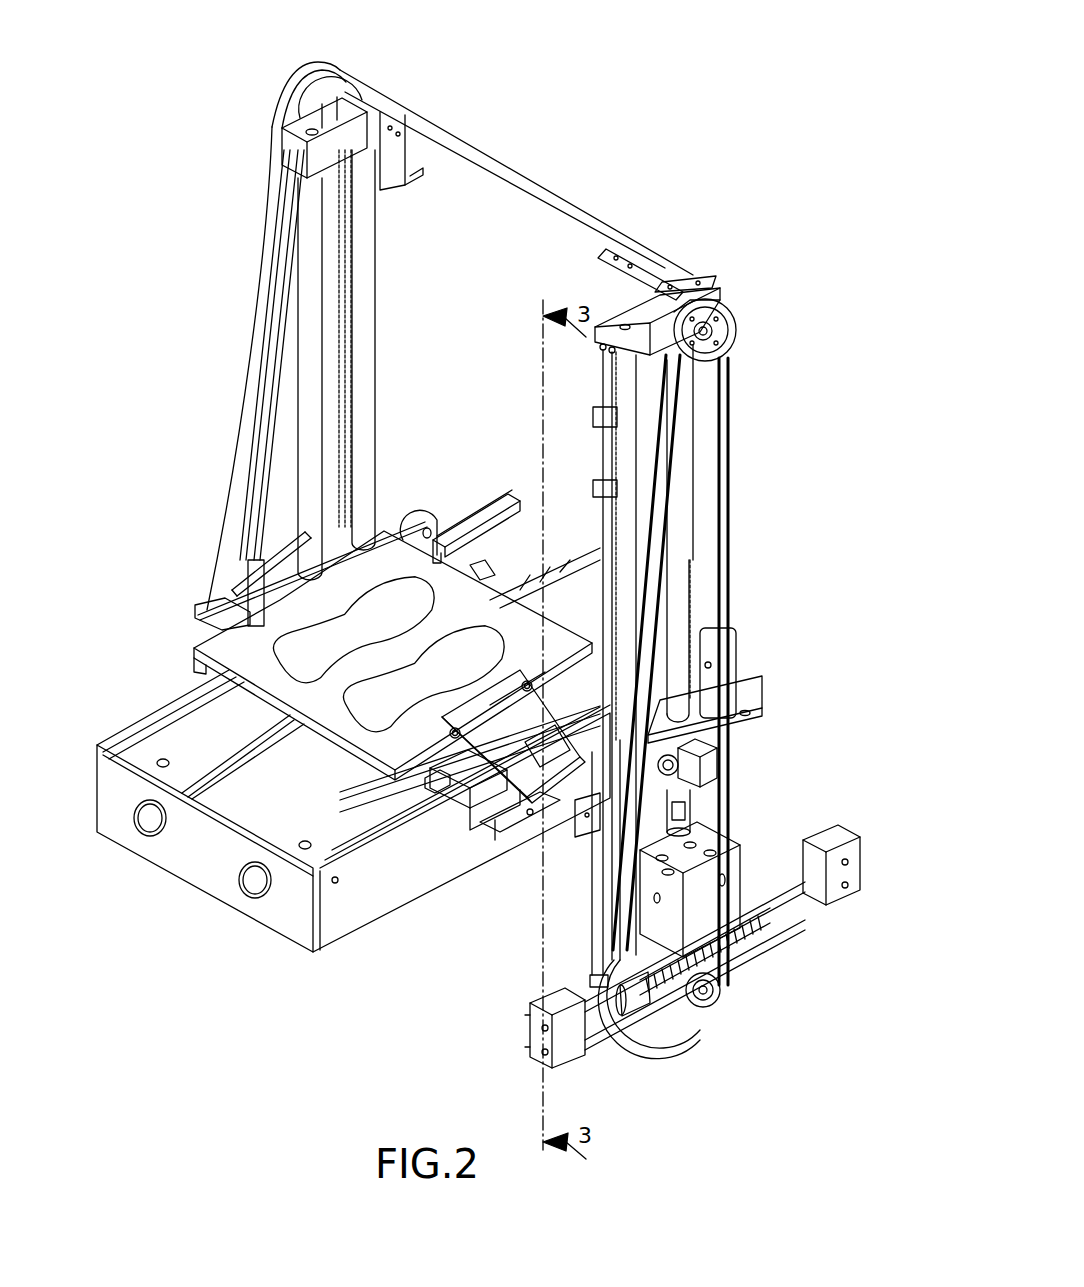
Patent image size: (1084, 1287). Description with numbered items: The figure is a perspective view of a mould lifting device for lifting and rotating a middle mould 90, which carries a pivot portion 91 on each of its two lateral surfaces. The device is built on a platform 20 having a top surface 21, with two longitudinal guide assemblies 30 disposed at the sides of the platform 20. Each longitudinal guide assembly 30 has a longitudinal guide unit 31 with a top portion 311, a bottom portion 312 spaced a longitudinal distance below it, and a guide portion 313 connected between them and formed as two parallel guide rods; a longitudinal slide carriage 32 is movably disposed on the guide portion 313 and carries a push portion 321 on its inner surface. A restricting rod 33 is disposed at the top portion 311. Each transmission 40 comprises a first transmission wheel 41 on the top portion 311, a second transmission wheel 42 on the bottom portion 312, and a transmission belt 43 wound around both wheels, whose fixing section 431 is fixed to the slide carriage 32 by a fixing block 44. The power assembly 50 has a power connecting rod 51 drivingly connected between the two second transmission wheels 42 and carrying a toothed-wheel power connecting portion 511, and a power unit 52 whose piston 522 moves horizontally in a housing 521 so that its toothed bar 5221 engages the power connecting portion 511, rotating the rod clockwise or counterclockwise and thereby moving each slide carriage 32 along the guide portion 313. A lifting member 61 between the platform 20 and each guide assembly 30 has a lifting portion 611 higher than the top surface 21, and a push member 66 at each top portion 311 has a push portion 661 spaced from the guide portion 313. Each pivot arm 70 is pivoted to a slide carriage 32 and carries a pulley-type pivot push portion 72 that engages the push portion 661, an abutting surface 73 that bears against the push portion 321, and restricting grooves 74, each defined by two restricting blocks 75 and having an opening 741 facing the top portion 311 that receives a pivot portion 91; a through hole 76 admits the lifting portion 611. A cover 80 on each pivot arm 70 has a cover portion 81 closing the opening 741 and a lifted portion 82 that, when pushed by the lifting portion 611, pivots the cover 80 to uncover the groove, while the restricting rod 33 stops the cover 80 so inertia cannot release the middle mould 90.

The platform 20 is at (353, 836).
The top surface 21 is at (320, 850).
The longitudinal guide assembly 30 is at (243, 330).
The longitudinal guide unit 31 is at (698, 455).
The top portion 311 is at (632, 318).
The bottom portion 312 is at (605, 912).
The guide portion 313 is at (683, 512).
The push portion 321 is at (584, 815).
The longitudinal slide carriage 32 is at (710, 705).
The restricting rod 33 is at (624, 334).
The transmission 40 is at (730, 287).
The first transmission wheel 41 is at (726, 322).
The second transmission wheel 42 is at (652, 1045).
The transmission belt 43 is at (742, 378).
The fixing section 431 is at (730, 752).
The fixing block 44 is at (722, 785).
The power assembly 50 is at (692, 976).
The power connecting rod 51 is at (556, 885).
The power connecting portion 511 is at (688, 1020).
The power unit 52 is at (593, 1045).
The housing 521 is at (808, 900).
The piston 522 is at (752, 935).
The toothed bar 5221 is at (738, 950).
The lifting member 61 is at (232, 603).
The lifting portion 611 is at (262, 590).
The push member 66 is at (405, 212).
The push portion 661 is at (432, 188).
The pivot arm 70 is at (470, 834).
The pivot push portion 72 is at (722, 670).
The abutting surface 73 is at (530, 818).
The restricting groove 74 is at (455, 750).
The opening 741 is at (435, 780).
The restricting block 75 is at (450, 790).
The through hole 76 is at (478, 822).
The cover 80 is at (524, 551).
The cover portion 81 is at (490, 706).
The lifted portion 82 is at (242, 528).
The middle mould 90 is at (404, 560).
The pivot portion 91 is at (452, 728).